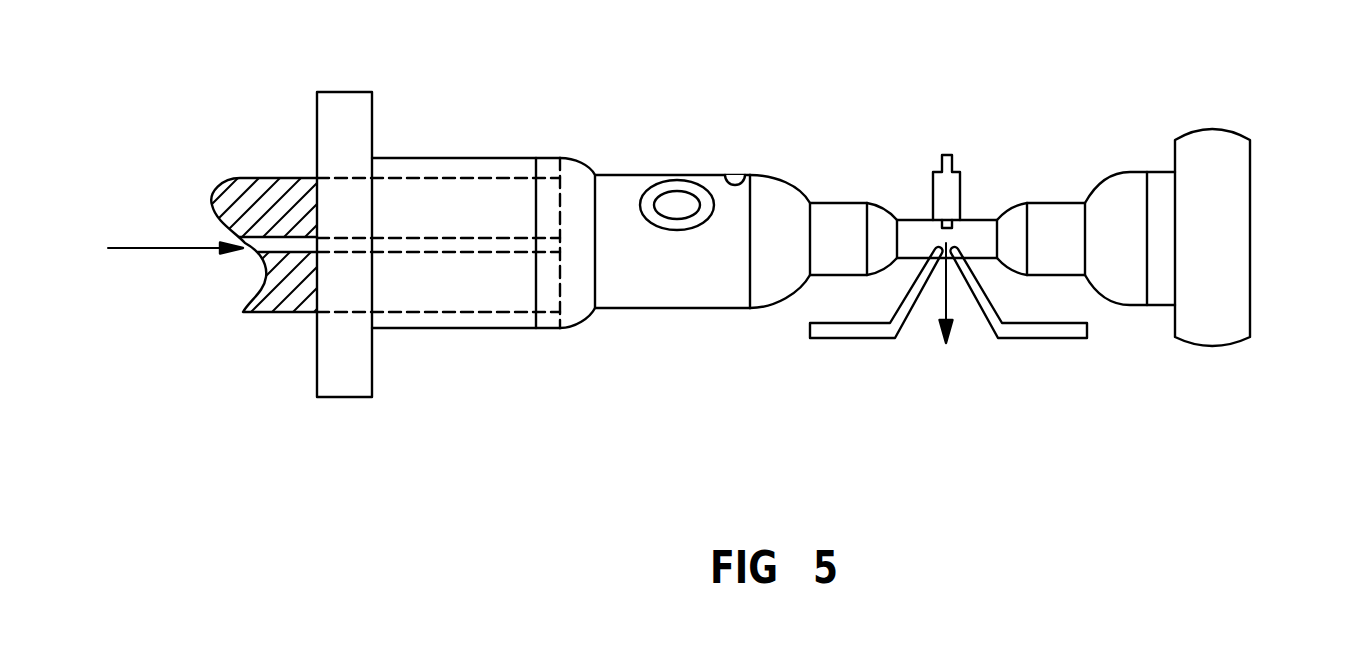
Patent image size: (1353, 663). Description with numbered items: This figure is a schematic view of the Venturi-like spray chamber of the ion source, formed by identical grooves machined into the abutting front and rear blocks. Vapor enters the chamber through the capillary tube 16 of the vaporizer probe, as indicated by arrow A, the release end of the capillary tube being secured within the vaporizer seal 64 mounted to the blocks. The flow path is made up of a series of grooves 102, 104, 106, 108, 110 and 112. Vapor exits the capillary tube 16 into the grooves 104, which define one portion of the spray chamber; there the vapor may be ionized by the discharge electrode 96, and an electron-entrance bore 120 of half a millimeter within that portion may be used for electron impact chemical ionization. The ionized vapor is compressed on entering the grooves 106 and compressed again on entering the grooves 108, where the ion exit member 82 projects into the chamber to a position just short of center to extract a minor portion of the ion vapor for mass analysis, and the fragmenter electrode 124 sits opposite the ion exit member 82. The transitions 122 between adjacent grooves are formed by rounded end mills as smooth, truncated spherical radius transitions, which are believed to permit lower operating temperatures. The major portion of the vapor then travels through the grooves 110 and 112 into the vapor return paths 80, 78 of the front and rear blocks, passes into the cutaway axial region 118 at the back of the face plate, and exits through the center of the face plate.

The capillary tube 16 is at (288, 178).
The vaporizer seal 64 is at (347, 118).
The groove 102 is at (473, 157).
The grooves 104 is at (653, 295).
The discharge electrode 96 is at (678, 183).
The electron-entrance bore 120 is at (733, 182).
The grooves 106 is at (842, 200).
The grooves 108 is at (915, 222).
The fragmenter electrode 124 is at (948, 157).
The grooves 110 is at (1057, 210).
The grooves 112 is at (1158, 182).
The vapor return path 80 is at (1237, 178).
The vapor return path 78 is at (1237, 312).
The ion exit member 82 is at (875, 338).
The transitions 122 is at (585, 158).
The cutaway axial region 118 is at (435, 238).
The arrow A is at (140, 248).